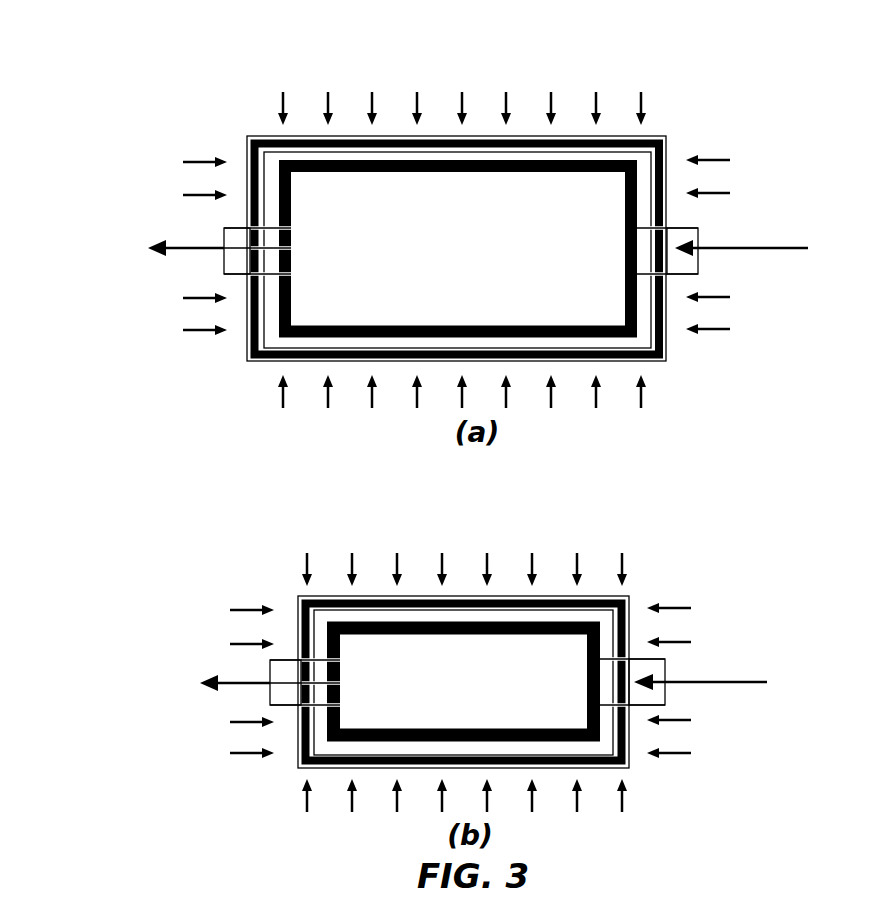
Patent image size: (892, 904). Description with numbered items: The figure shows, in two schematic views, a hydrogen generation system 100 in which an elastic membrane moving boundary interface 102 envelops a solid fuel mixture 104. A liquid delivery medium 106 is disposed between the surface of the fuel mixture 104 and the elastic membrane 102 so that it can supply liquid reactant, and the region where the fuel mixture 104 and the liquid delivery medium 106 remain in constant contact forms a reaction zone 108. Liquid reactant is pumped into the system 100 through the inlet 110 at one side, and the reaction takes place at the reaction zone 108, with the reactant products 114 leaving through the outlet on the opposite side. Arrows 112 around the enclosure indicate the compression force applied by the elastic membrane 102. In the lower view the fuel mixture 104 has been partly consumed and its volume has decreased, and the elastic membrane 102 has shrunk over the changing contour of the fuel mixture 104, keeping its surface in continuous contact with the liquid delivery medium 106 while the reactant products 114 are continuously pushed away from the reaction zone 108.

The hydrogen generation system 100 is at (102, 117).
The elastic membrane moving boundary interface 102 is at (565, 137).
The solid fuel mixture 104 is at (470, 442).
The liquid delivery medium 106 is at (480, 138).
The reaction zone 108 is at (425, 137).
The inlet 110 is at (735, 248).
The pressure / heat flow arrows 112 is at (640, 100).
The reactant products 114 is at (193, 250).